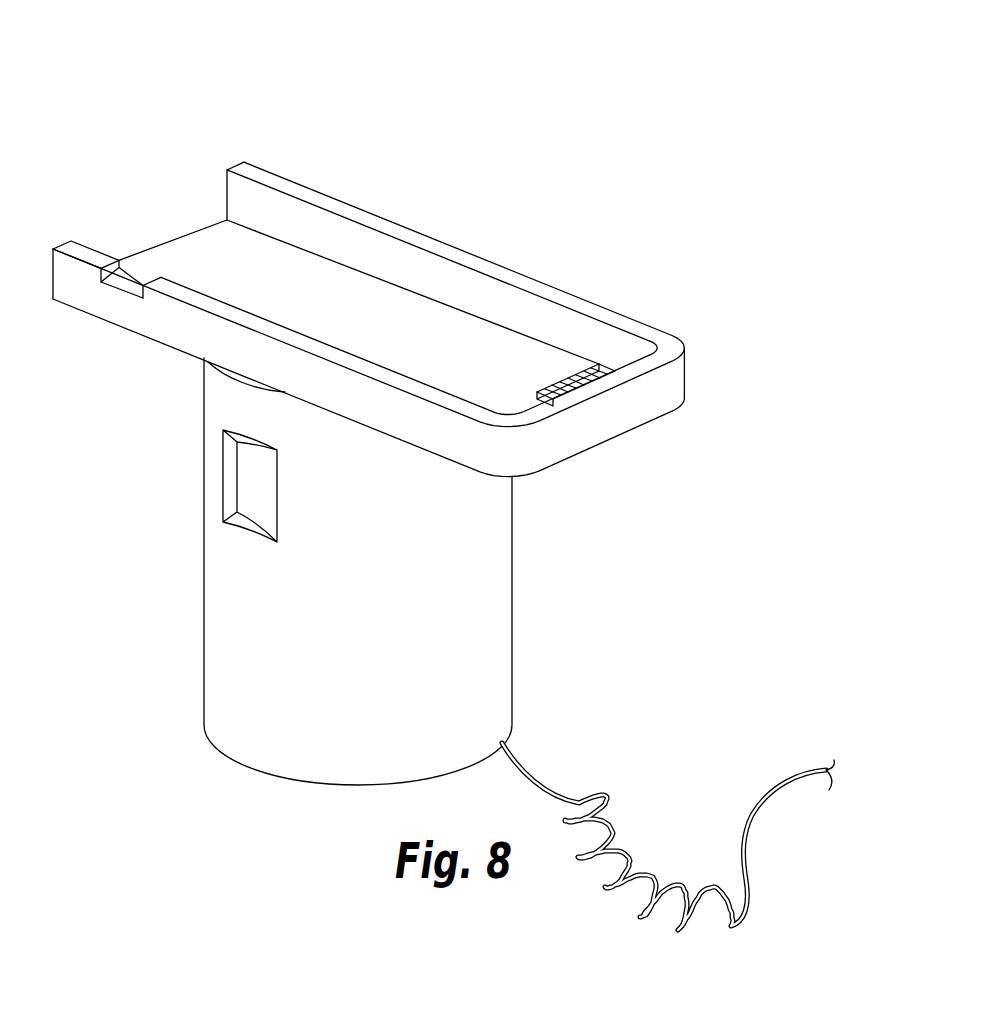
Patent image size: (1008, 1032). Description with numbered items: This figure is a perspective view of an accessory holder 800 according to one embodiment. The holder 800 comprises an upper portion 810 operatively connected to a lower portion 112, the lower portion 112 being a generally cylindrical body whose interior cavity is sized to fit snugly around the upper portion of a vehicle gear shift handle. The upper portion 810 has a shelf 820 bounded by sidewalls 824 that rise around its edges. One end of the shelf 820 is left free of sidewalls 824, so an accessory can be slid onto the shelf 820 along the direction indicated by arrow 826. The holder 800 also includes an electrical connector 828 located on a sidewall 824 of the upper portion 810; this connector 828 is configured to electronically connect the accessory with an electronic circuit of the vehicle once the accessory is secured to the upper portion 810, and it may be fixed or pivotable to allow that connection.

The accessory holder 800 is at (453, 107).
The upper portion 810 is at (447, 243).
The sidewalls 824 is at (263, 210).
The shelf 820 is at (497, 350).
The arrow 826 is at (150, 233).
The electrical connector 828 is at (577, 370).
The lower portion 112 is at (233, 643).